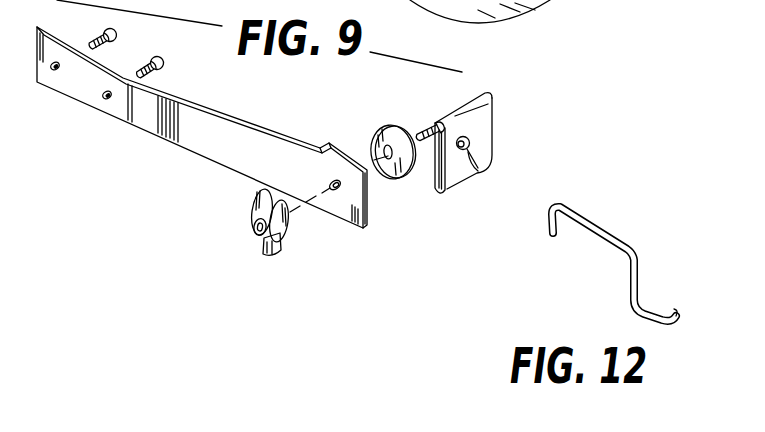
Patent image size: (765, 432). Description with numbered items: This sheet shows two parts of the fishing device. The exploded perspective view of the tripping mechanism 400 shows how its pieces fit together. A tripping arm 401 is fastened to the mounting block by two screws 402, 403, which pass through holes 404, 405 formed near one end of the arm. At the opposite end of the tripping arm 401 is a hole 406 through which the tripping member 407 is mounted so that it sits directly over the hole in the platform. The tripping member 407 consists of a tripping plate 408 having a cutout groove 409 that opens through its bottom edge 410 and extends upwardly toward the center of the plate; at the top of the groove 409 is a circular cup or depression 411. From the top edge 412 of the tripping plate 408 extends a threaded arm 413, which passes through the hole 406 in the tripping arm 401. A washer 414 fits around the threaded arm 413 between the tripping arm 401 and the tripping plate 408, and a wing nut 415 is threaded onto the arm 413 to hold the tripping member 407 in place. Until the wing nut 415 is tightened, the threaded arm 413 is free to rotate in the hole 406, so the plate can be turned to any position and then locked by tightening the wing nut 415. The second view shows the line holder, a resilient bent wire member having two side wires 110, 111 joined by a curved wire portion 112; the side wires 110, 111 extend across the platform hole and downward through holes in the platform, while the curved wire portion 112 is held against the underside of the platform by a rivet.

In FIG. 9, the tripping mechanism 400 is at (200, 168).
In FIG. 9, the tripping arm 401 is at (240, 117).
In FIG. 9, the screw 402 is at (118, 32).
In FIG. 9, the screw 403 is at (168, 63).
In FIG. 9, the hole 404 is at (53, 70).
In FIG. 9, the hole 405 is at (106, 99).
In FIG. 9, the hole 406 is at (336, 182).
In FIG. 9, the tripping member 407 is at (505, 110).
In FIG. 9, the tripping plate 408 is at (488, 112).
In FIG. 9, the cutout groove 409 is at (465, 180).
In FIG. 9, the bottom edge 410 is at (478, 173).
In FIG. 9, the circular cup or depression 411 is at (472, 145).
In FIG. 9, the top edge 412 is at (480, 90).
In FIG. 9, the threaded arm 413 is at (421, 126).
In FIG. 9, the washer 414 is at (403, 178).
In FIG. 9, the wing nut 415 is at (275, 257).
In FIG. 12, the side wire 110 is at (582, 236).
In FIG. 12, the side wire 111 is at (617, 233).
In FIG. 12, the curved wire portion 112 is at (680, 320).